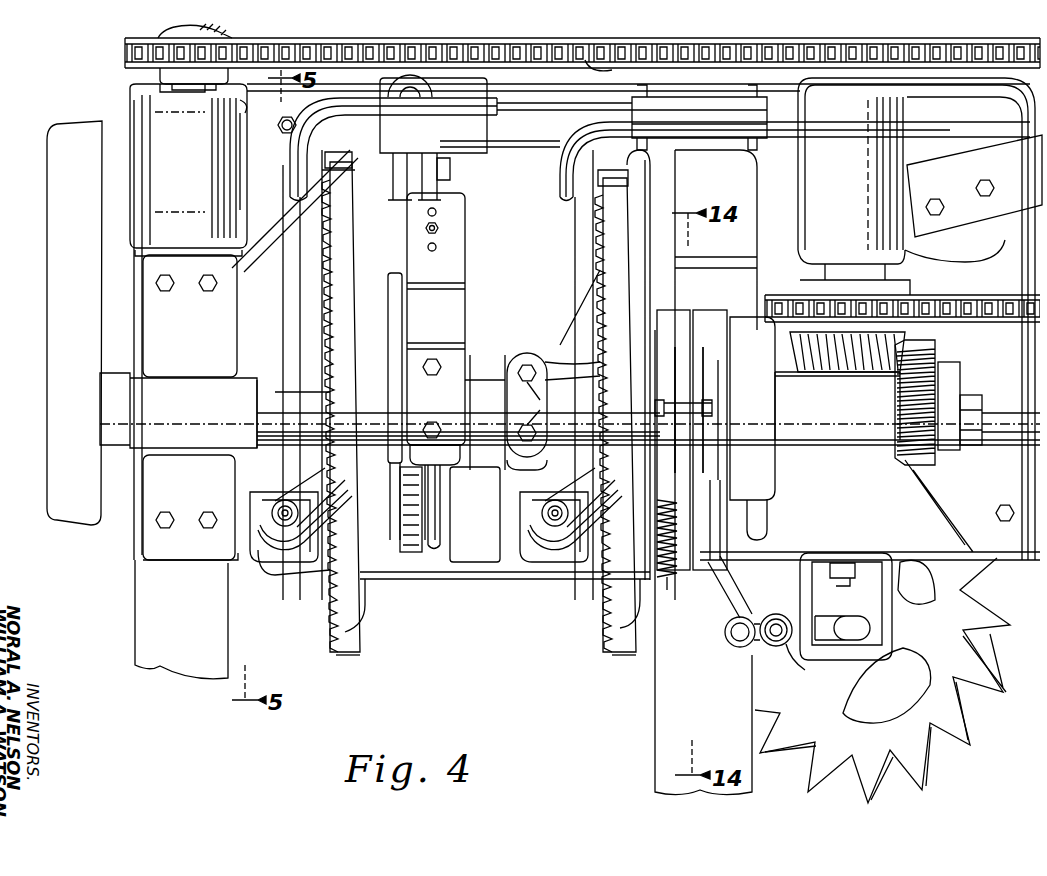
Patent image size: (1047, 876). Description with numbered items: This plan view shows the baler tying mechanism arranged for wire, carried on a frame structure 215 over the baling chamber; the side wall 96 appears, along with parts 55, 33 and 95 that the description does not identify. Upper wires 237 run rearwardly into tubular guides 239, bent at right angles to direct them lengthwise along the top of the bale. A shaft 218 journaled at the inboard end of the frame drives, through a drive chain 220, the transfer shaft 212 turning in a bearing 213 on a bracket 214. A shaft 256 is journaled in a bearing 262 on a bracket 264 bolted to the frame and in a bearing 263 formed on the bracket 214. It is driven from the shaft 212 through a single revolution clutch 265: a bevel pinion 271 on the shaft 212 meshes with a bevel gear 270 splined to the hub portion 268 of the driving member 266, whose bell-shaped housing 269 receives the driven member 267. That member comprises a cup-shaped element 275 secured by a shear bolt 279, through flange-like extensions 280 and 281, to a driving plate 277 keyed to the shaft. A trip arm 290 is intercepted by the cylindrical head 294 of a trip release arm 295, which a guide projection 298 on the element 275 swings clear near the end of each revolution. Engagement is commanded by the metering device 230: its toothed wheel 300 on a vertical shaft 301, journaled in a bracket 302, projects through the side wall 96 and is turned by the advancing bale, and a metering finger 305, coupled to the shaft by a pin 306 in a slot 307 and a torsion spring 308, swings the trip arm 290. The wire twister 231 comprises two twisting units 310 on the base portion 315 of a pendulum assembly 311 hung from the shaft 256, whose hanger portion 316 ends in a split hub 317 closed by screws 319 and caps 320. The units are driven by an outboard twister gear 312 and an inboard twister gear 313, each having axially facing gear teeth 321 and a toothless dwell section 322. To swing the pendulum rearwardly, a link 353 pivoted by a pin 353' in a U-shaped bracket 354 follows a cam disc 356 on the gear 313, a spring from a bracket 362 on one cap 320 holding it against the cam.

The shaft 218 is at (172, 40).
The drive chain 220 is at (614, 70).
The U-shaped bracket 354 is at (432, 92).
The link 353 is at (435, 176).
The pin 353' is at (465, 167).
The bracket 362 is at (450, 266).
The tubular guides 239 is at (290, 158).
The dwell section 322 is at (322, 188).
The upper wires 237 is at (297, 266).
The bearing 213 is at (886, 134).
The bracket 214 is at (965, 272).
The paddle 55 is at (60, 316).
The bearing 262 is at (180, 386).
The gear teeth 321 is at (328, 314).
The cam disc 356 is at (398, 330).
The caps 320 is at (530, 355).
The split bearing or hub 317 is at (484, 386).
The screws 319 is at (536, 408).
The driving plate 277 is at (670, 326).
The driven member 267 is at (690, 303).
The cup-shaped element 275 is at (708, 328).
The flange-like extension 280 is at (690, 384).
The flange-like extension 281 is at (700, 398).
The shear bolt 279 is at (712, 410).
The bevel pinion 271 is at (834, 334).
The transfer shaft 212 is at (900, 326).
The driving member 266 is at (788, 404).
The bevel gear 270 is at (930, 405).
The bell-shaped housing 269 is at (762, 454).
The hub portion 268 is at (876, 430).
The bearing 263 is at (1002, 440).
The single revolution clutch 265 is at (768, 480).
The cam or guide projection 298 is at (716, 492).
The trip release arm 295 is at (752, 524).
The bracket 302 is at (868, 560).
The shaft 256 is at (258, 428).
The bracket 264 is at (150, 512).
The frame structure 215 is at (237, 565).
The bracket 33 is at (265, 572).
The twisting units 310 is at (314, 542).
The pendulum assembly 311 is at (415, 586).
The hanger portion 316 is at (446, 542).
The base portion 315 is at (472, 576).
The wire twister 231 is at (530, 590).
The inboard twister gear 313 is at (347, 655).
The outboard twister gear 312 is at (622, 655).
The panel 95 is at (142, 637).
The side wall 96 is at (672, 740).
The cylindrical head 294 is at (686, 576).
The trip arm 290 is at (722, 582).
The metering finger 305 is at (740, 588).
The slot 307 is at (764, 616).
The pin 306 is at (746, 644).
The torsion spring 308 is at (772, 652).
The shaft 301 is at (838, 642).
The metering device 230 is at (996, 670).
The toothed wheel 300 is at (950, 718).